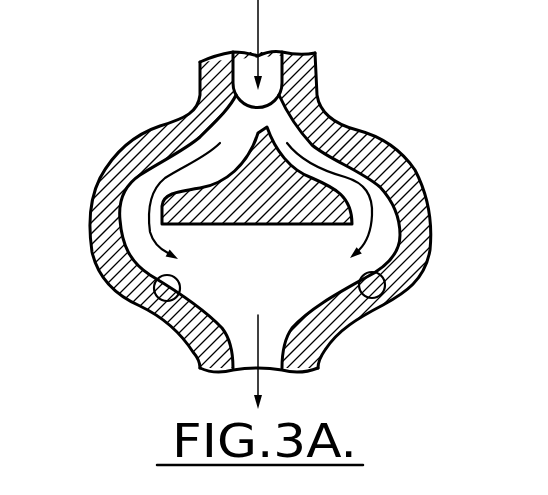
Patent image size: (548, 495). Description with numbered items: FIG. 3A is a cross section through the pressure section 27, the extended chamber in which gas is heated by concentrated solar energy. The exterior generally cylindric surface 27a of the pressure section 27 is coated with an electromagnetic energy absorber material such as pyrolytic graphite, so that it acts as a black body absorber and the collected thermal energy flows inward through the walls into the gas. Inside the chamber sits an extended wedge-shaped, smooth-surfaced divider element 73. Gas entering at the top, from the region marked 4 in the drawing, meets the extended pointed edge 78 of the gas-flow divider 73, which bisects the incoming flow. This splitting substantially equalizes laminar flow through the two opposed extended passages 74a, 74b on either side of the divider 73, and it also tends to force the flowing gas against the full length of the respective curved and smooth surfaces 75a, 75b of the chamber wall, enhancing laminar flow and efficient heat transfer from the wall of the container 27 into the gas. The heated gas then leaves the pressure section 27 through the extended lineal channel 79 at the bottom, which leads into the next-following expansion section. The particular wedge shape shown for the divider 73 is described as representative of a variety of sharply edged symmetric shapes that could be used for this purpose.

The inlet passage 4 is at (316, 74).
The pressure section 27 is at (422, 157).
The exterior generally cylindric surface 27a is at (170, 122).
The divider element 73 is at (272, 225).
The extended passage 74a is at (143, 188).
The extended passage 74b is at (383, 203).
The curved and smooth surface 75a is at (152, 312).
The curved and smooth surface 75b is at (376, 302).
The extended pointed edge 78 is at (316, 97).
The extended lineal channel 79 is at (273, 338).